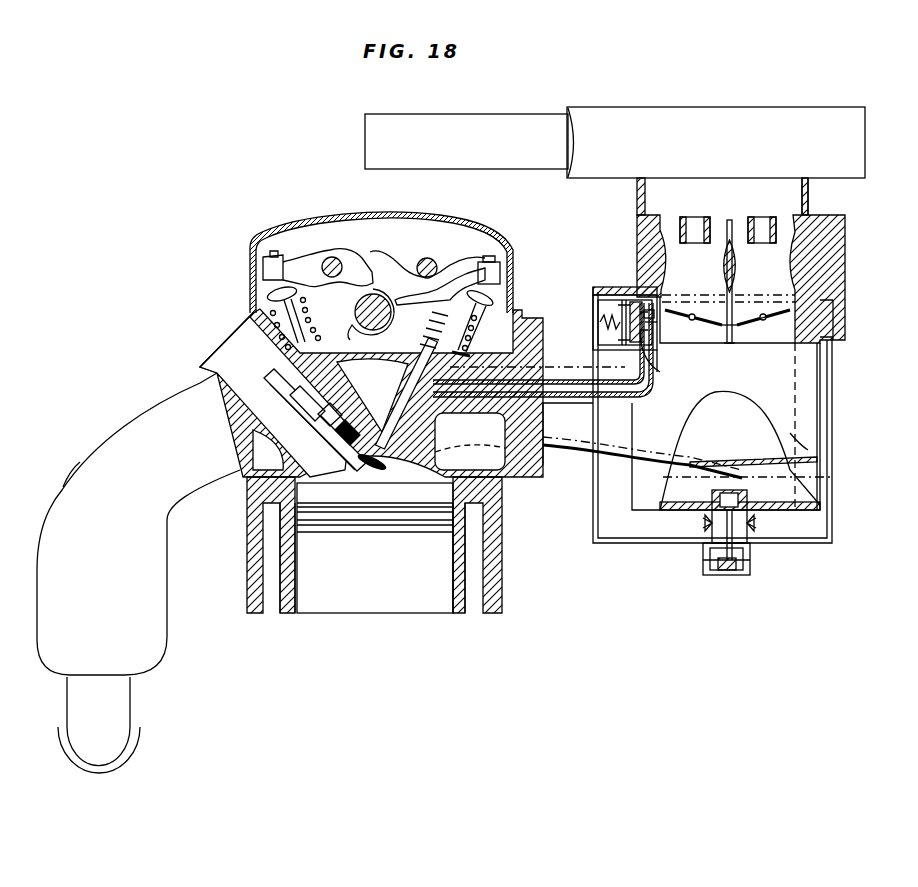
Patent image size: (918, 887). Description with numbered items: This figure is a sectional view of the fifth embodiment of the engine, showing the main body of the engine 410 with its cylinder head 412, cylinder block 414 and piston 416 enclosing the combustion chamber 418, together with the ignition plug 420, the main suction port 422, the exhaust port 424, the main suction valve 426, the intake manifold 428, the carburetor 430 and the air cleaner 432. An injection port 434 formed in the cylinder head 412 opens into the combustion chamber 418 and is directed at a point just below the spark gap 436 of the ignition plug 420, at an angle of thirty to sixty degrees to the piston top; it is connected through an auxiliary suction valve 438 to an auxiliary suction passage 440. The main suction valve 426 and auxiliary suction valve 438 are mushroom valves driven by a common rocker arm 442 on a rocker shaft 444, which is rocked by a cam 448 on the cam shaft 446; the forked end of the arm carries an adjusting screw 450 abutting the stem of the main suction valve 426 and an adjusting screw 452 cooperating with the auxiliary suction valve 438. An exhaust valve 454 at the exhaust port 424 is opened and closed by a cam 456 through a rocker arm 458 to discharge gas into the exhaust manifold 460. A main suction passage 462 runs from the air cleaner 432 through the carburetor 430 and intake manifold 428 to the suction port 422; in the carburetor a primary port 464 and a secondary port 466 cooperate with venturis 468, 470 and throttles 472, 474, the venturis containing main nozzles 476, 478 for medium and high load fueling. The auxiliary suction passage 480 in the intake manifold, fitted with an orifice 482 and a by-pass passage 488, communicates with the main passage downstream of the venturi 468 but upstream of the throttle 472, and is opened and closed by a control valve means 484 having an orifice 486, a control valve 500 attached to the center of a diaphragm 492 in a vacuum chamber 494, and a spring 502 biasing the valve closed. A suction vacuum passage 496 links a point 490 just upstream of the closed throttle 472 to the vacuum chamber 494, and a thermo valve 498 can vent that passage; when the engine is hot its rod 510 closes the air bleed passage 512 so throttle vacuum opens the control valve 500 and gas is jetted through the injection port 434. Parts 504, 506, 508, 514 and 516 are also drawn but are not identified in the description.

The main body of the engine 410 is at (248, 232).
The cylinder head 412 is at (250, 322).
The cylinder block 414 is at (245, 540).
The piston 416 is at (378, 605).
The combustion chamber 418 is at (290, 517).
The ignition plug 420 is at (296, 382).
The main suction port 422 is at (568, 434).
The exhaust port 424 is at (250, 447).
The main suction valve 426 is at (418, 505).
The intake manifold 428 is at (555, 449).
The carburetor 430 is at (845, 292).
The air cleaner 432 is at (600, 165).
The injection port 434 is at (380, 508).
The spark gap 436 is at (332, 498).
The auxiliary suction valve 438 is at (520, 445).
The auxiliary suction passage 440 is at (508, 404).
The rocker arm 442 is at (404, 252).
The rocker shaft 444 is at (432, 258).
The cam shaft 446 is at (458, 300).
The cam 448 is at (372, 395).
The adjusting screw 450 is at (622, 300).
The adjusting screw 452 is at (600, 305).
The exhaust valve 454 is at (330, 303).
The cam 456 is at (360, 290).
The rocker arm 458 is at (312, 256).
The exhaust manifold 460 is at (152, 428).
The main suction passage 462 is at (750, 426).
The primary port 464 is at (782, 272).
The secondary port 466 is at (712, 272).
The venturi 468 is at (760, 226).
The venturi 470 is at (690, 226).
The throttle 472 is at (755, 330).
The throttle 474 is at (728, 330).
The main nozzle 476 is at (806, 218).
The main nozzle 478 is at (728, 236).
The auxiliary suction passage 480 is at (648, 398).
The orifice 482 is at (652, 322).
The control valve means 484 is at (644, 305).
The orifice 486 is at (636, 300).
The by-pass passage 488 is at (650, 320).
The point just upstream of the throttle valve 490 is at (770, 302).
The diaphragm 492 is at (656, 362).
The vacuum chamber 494 is at (620, 300).
The suction vacuum passage 496 is at (600, 555).
The thermo valve 498 is at (758, 572).
The control valve 500 is at (598, 305).
The spring 502 is at (596, 296).
The fuel level 504 is at (800, 492).
The valve seat 506 is at (724, 490).
The valve guide 508 is at (756, 518).
The rod 510 is at (703, 518).
The air bleed passage 512 is at (731, 575).
The valve stem 514 is at (712, 545).
The nut 516 is at (716, 572).